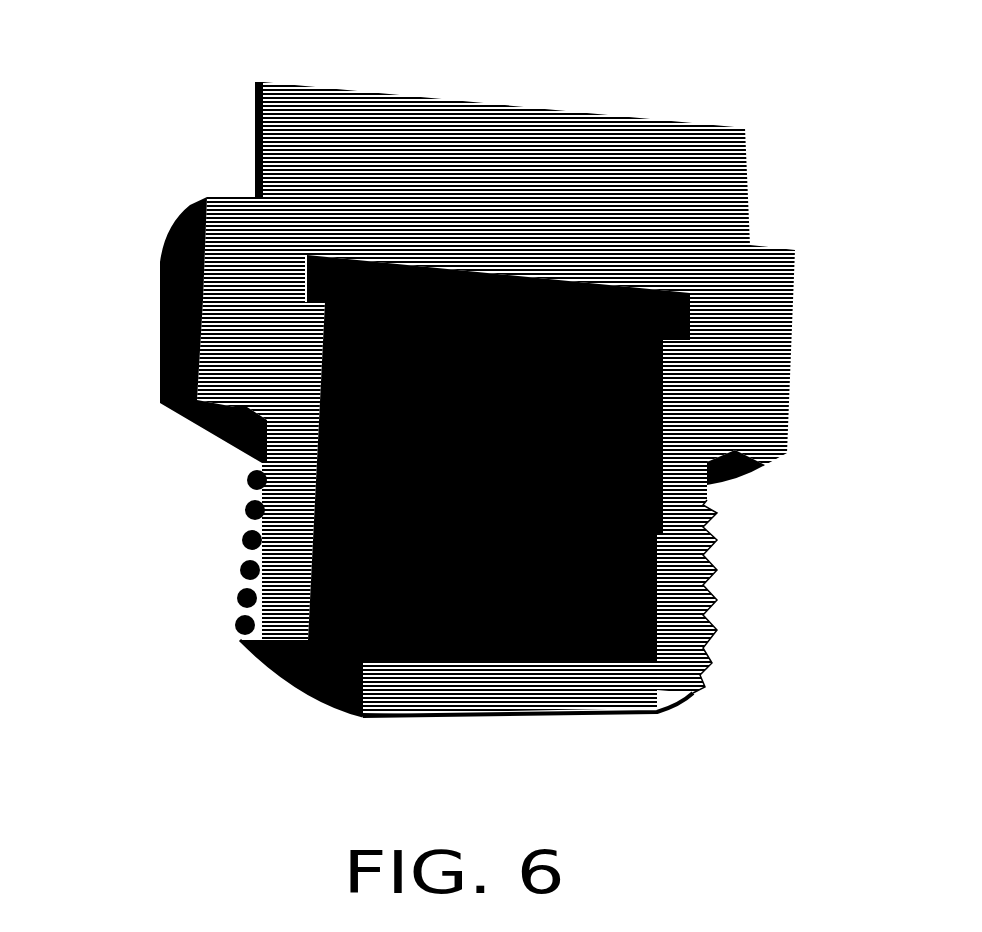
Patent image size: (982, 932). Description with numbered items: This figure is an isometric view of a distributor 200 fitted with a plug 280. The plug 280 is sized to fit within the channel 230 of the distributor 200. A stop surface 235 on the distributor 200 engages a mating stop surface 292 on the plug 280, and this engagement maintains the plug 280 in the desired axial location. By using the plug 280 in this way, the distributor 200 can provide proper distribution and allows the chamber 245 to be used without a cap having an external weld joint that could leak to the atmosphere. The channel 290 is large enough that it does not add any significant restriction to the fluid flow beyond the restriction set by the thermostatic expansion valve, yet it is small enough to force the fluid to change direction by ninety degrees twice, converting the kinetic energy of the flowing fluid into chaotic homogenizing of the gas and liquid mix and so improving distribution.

The distributor 200 is at (218, 62).
The channel 230 is at (503, 273).
The chamber 245 is at (330, 308).
The stop surface 235 is at (317, 500).
The stop surface 292 is at (662, 540).
The plug 280 is at (257, 648).
The channel 290 is at (340, 697).